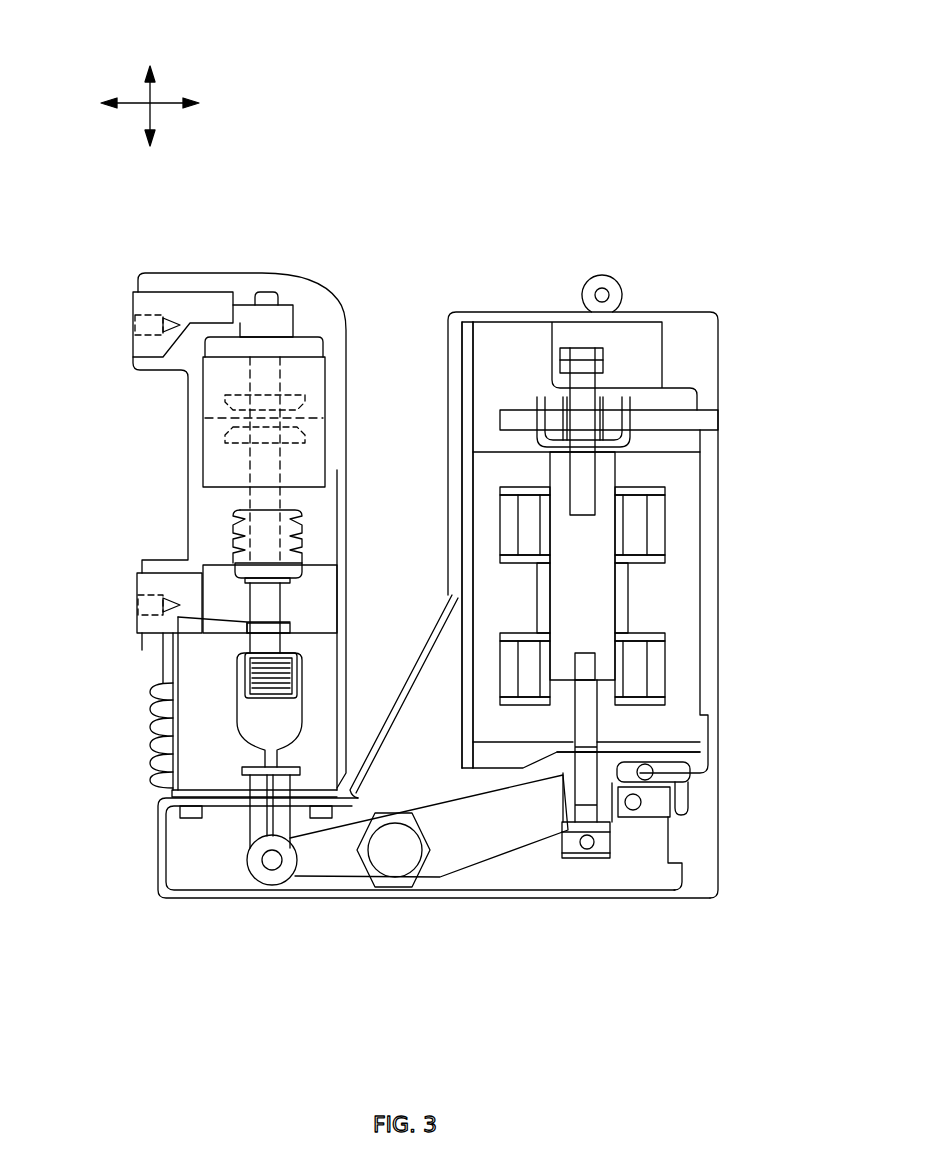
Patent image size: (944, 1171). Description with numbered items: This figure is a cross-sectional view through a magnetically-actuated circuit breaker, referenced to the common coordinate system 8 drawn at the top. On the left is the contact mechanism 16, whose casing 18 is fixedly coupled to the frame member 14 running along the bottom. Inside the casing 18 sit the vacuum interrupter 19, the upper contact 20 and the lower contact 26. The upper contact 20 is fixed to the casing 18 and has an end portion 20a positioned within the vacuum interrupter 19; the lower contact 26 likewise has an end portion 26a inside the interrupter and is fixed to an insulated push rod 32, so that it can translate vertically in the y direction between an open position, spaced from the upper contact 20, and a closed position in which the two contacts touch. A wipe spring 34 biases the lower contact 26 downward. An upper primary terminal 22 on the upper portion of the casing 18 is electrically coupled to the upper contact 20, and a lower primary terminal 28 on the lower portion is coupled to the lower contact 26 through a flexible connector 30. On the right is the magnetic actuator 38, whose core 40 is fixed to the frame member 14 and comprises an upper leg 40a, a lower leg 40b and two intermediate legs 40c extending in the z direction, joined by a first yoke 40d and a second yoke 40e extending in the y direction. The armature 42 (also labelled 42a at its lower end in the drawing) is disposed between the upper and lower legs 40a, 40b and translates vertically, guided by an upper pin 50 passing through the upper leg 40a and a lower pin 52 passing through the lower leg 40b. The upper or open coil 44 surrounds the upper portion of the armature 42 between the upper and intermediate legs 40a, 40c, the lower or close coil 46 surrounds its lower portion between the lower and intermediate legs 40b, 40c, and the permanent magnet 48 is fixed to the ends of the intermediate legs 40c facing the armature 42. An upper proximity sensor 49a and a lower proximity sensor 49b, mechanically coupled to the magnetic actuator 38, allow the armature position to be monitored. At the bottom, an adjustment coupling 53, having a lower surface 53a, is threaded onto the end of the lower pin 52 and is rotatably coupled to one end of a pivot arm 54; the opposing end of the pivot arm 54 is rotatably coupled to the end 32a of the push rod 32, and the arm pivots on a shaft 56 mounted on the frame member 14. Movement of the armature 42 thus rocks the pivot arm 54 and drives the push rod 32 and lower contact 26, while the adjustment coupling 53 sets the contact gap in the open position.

The coordinate system 8 is at (178, 47).
The frame member 14 is at (160, 870).
The contact mechanism 16 is at (312, 262).
The casing 18 is at (198, 525).
The vacuum interrupter 19 is at (222, 465).
The upper contact 20 is at (308, 366).
The end portion 20a is at (222, 402).
The upper primary terminal 22 is at (150, 303).
The lower contact 26 is at (312, 452).
The end portion 26a is at (222, 433).
The lower primary terminal 28 is at (150, 590).
The flexible connector 30 is at (200, 635).
The insulated push rod 32 is at (263, 727).
The end 32a is at (255, 880).
The wipe spring 34 is at (247, 685).
The magnetic actuator 38 is at (665, 270).
The core 40 is at (458, 684).
The upper leg 40a is at (678, 478).
The lower leg 40b is at (658, 733).
The intermediate legs 40c is at (492, 601).
The first yoke 40d is at (487, 519).
The second yoke 40e is at (690, 525).
The armature 42 is at (603, 587).
The core tip 42a is at (556, 688).
The upper coil 44 is at (637, 515).
The lower coil 46 is at (630, 685).
The permanent magnet 48 is at (625, 660).
The upper proximity sensor 49a is at (654, 778).
The lower proximity sensor 49b is at (641, 810).
The upper pin 50 is at (585, 470).
The lower pin 52 is at (587, 730).
The adjustment coupling 53 is at (655, 870).
The lower surface 53a is at (590, 878).
The pivot arm 54 is at (426, 788).
The shaft 56 is at (408, 882).